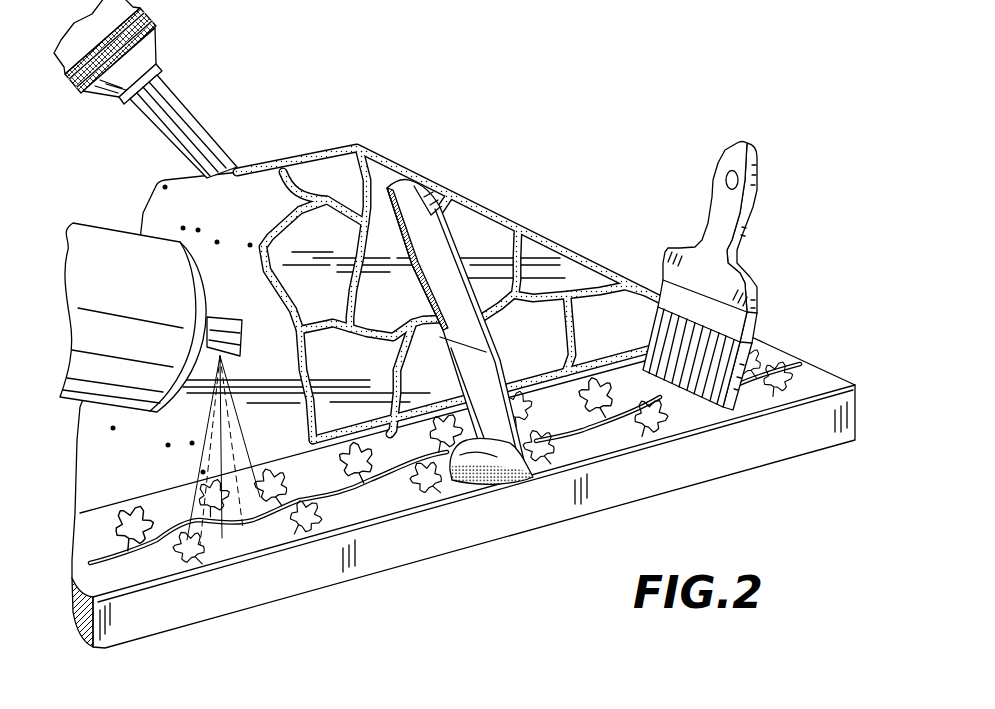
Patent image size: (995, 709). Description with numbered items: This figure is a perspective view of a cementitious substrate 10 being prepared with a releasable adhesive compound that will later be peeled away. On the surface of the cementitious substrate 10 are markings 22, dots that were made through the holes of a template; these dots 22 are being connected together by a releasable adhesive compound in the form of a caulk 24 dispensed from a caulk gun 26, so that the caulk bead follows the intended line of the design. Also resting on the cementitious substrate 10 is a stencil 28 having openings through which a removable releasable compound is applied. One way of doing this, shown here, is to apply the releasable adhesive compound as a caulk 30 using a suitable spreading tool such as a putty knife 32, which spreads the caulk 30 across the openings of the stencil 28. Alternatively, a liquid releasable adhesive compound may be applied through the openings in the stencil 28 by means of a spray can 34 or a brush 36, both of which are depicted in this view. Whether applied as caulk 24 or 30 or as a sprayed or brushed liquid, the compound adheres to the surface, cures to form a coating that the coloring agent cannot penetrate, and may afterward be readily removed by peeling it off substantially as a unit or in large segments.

The cementitious substrate 10 is at (402, 580).
The markings 22 is at (183, 226).
The caulk 24 is at (278, 167).
The caulk gun 26 is at (192, 110).
The stencil 28 is at (690, 437).
The caulk 30 is at (507, 466).
The putty knife 32 is at (484, 358).
The spray can 34 is at (100, 227).
The brush 36 is at (712, 194).